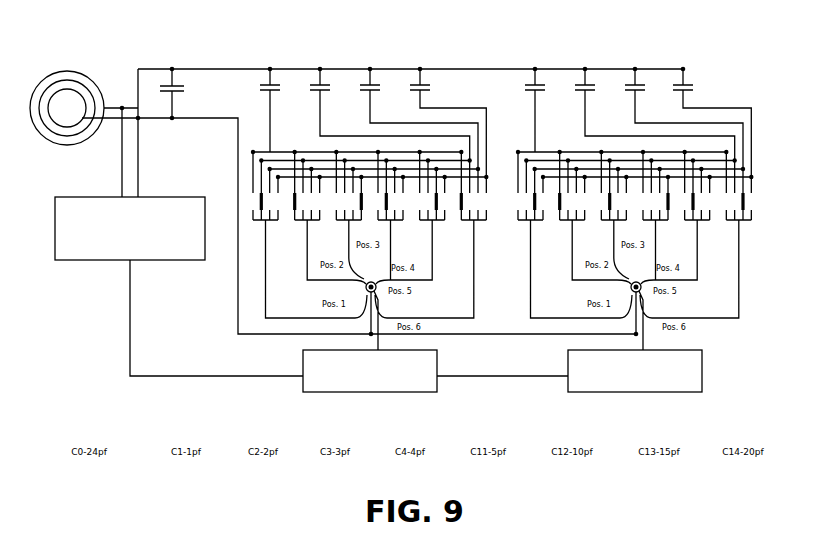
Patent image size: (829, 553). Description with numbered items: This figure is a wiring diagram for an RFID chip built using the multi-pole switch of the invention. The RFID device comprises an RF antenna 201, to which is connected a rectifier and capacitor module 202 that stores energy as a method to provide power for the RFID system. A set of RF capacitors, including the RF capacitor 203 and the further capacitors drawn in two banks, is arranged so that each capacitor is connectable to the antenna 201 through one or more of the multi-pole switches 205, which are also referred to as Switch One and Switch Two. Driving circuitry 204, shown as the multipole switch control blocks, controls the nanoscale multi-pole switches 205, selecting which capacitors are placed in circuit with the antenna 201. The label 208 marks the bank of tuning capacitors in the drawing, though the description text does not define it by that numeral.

The RF antenna 201 is at (100, 67).
The rectifier and capacitor module 202 is at (119, 270).
The RF capacitor 203 is at (188, 83).
The driving circuitry 204 is at (449, 386).
The multi-pole switch 205 is at (600, 328).
The tuning capacitors 208 is at (556, 76).